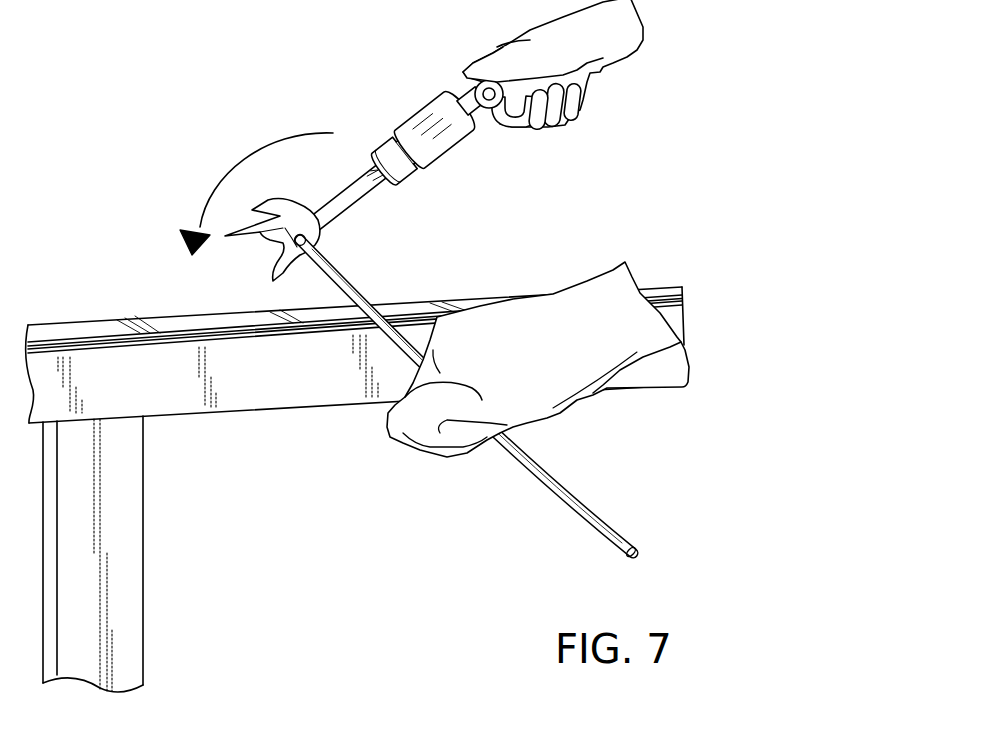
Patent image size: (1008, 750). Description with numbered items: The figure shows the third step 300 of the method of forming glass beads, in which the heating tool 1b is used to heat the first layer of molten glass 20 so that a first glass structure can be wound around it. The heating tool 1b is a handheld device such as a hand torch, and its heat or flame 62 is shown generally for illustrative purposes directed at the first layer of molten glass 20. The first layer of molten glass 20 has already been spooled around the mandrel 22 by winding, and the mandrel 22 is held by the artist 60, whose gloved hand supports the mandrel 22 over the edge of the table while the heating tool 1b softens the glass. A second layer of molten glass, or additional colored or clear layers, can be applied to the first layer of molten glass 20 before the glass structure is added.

The third step 300 is at (100, 142).
The flame 62 is at (345, 193).
The heating tool 1b is at (433, 157).
The first layer of molten glass 20 is at (273, 240).
The mandrel 22 is at (590, 522).
The artist 60 is at (607, 295).